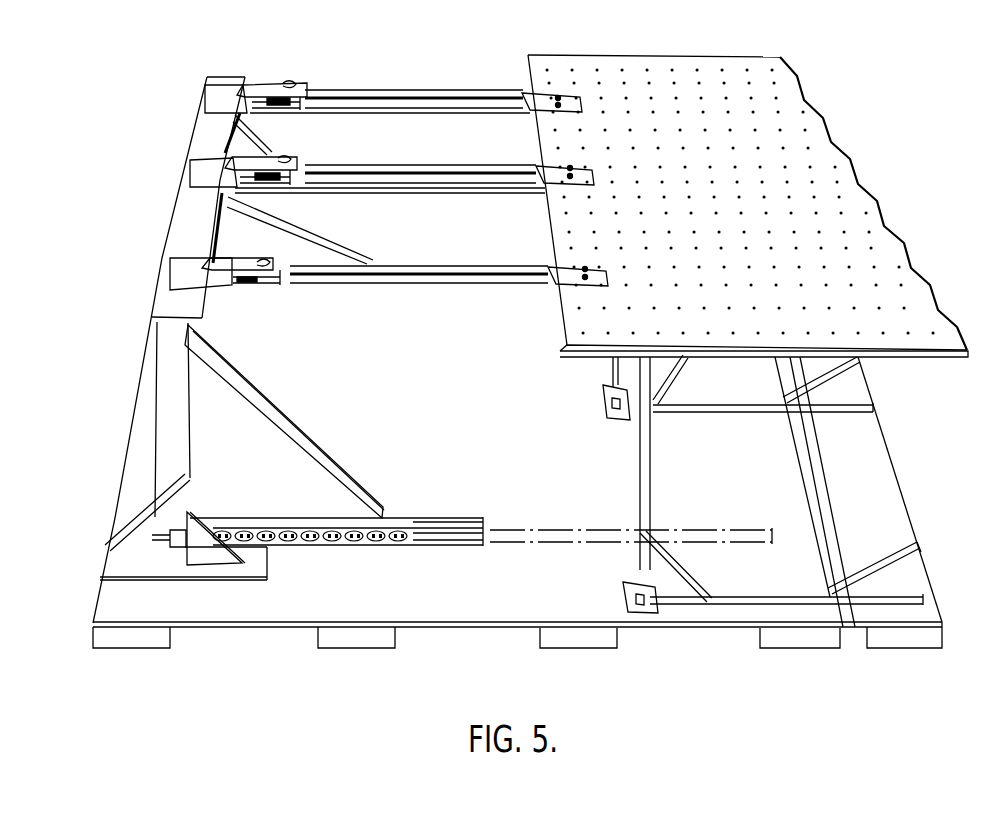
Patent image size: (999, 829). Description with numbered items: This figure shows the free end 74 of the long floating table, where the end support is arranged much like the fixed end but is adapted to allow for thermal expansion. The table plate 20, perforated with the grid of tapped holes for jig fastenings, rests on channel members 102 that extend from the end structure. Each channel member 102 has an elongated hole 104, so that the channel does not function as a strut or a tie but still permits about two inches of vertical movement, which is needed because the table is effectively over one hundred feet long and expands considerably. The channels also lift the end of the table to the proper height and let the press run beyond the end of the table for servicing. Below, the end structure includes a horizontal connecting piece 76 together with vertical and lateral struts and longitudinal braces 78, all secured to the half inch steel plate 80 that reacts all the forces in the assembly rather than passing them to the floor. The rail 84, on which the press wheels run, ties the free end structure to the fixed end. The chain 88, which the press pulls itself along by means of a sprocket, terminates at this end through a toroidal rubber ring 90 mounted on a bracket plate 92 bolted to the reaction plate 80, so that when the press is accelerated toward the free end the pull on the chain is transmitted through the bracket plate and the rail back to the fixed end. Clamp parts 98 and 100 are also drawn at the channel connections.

The plate 20 is at (528, 55).
The free end 74 is at (165, 168).
The horizontal connecting piece 76 is at (188, 220).
The longitudinal brace 78 is at (326, 217).
The steel plate 80 is at (262, 627).
The rail 84 is at (450, 538).
The chain 88 is at (342, 548).
The toroidal rubber ring 90 is at (180, 546).
The bracket plate 92 is at (253, 578).
The clamp spring 98 is at (283, 85).
The clamp plate 100 is at (270, 85).
The channel member 102 is at (398, 90).
The elongated hole 104 is at (293, 97).